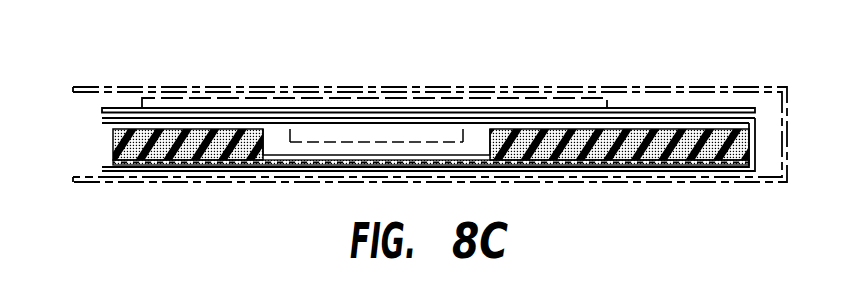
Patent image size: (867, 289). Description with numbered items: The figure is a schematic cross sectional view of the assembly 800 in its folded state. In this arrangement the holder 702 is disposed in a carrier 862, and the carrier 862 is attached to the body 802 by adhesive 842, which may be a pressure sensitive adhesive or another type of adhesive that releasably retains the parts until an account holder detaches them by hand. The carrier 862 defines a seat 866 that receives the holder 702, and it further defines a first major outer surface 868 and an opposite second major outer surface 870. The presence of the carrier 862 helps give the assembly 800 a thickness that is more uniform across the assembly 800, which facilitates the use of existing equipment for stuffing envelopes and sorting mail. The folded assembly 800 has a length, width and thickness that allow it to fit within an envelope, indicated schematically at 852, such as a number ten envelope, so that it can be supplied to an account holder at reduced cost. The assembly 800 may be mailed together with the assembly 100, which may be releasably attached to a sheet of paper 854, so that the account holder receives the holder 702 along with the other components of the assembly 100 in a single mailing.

The assembly 100 is at (214, 97).
The holder 702 is at (284, 129).
The assembly 800 is at (675, 118).
The body 802 is at (101, 169).
The adhesive 842 is at (752, 163).
The envelope 852 is at (330, 87).
The sheet of paper 854 is at (101, 111).
The carrier 862 is at (750, 152).
The seat 866 is at (489, 146).
The first major outer surface 868 is at (729, 138).
The second major outer surface 870 is at (717, 163).